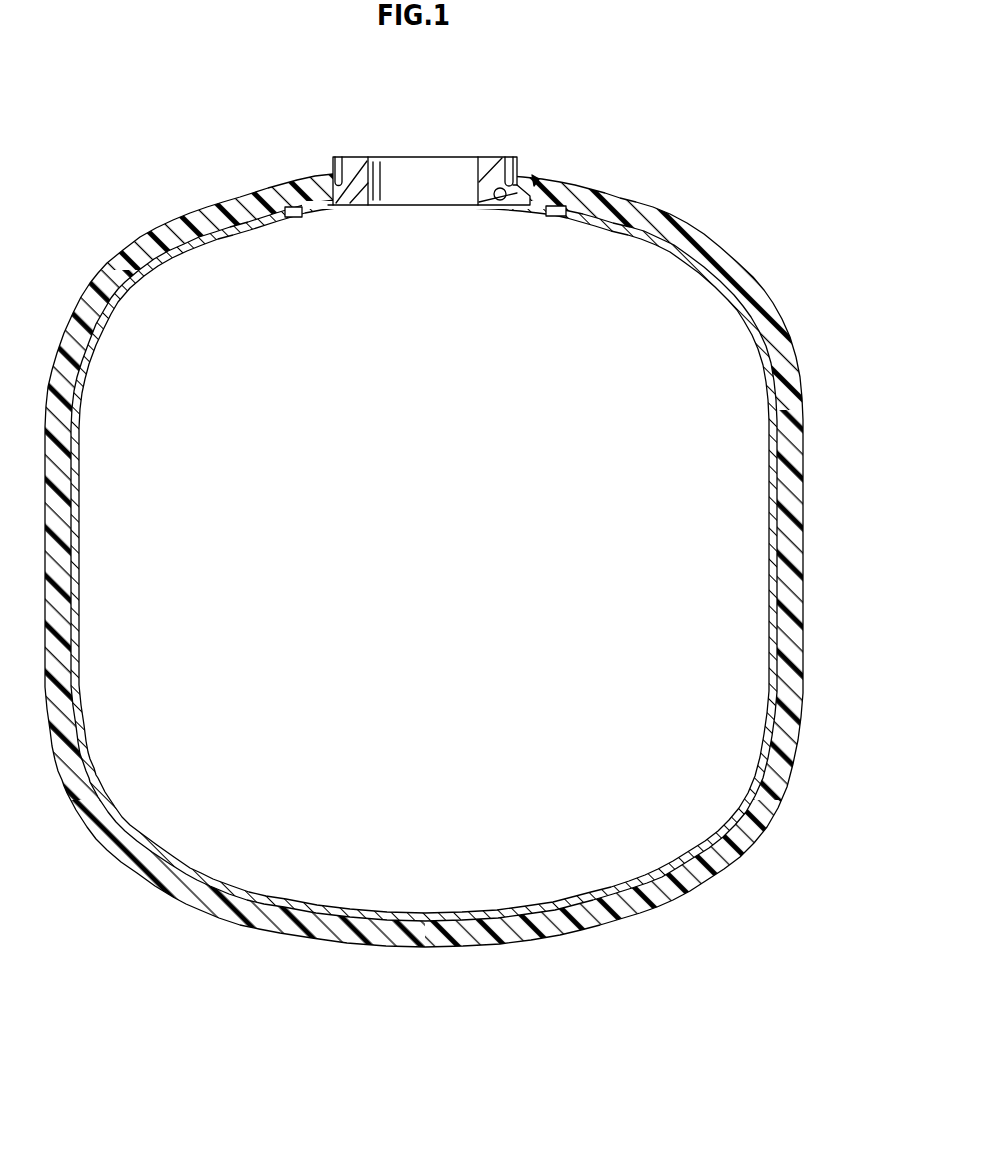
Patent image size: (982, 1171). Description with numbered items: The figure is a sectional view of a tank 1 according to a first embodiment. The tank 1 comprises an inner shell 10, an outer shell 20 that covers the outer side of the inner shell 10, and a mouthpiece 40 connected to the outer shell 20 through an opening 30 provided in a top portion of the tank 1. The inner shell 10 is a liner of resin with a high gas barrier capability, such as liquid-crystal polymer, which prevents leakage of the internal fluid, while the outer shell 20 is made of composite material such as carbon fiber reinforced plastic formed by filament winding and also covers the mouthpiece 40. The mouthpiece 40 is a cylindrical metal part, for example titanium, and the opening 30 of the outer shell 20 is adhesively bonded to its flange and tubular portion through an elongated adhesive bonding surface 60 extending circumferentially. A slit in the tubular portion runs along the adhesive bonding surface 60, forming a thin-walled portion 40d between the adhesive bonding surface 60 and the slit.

The tank 1 is at (491, 585).
The inner shell 10 is at (563, 216).
The outer shell 20 is at (540, 180).
The opening 30 is at (499, 189).
The mouthpiece 40 is at (435, 146).
The thin-walled portion 40d is at (492, 172).
The adhesive bonding surface 60 is at (535, 176).